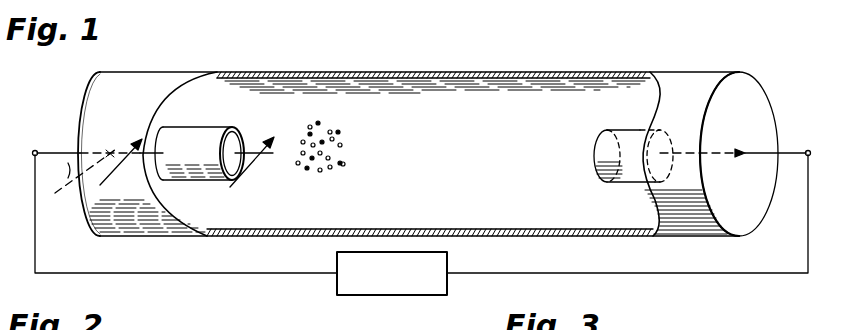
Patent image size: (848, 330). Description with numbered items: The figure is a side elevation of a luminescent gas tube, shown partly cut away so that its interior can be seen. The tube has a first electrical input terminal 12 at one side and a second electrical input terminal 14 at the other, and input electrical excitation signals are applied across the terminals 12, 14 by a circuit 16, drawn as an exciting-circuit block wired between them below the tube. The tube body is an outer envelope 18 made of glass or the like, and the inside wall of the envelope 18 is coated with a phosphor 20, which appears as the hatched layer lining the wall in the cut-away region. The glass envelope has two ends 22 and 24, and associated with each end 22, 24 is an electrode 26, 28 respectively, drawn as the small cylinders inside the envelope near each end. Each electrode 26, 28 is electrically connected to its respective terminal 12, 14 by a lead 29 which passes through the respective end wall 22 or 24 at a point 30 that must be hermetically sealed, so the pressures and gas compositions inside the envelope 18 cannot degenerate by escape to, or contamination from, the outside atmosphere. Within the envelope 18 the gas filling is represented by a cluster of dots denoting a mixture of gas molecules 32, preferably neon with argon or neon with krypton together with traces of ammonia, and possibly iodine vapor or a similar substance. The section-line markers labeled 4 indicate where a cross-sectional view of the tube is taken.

The first electrical input terminal 12 is at (45, 131).
The second electrical input terminal 14 is at (808, 151).
The circuit 16 is at (390, 296).
The outer envelope 18 is at (567, 73).
The phosphor 20 is at (433, 58).
The end 22 is at (92, 99).
The end 24 is at (747, 95).
The electrode 26 is at (203, 112).
The electrode 28 is at (631, 116).
The lead 29 is at (78, 167).
The point 30 is at (80, 183).
The gas molecules 32 is at (337, 168).
The section line 4- 4 is at (185, 170).